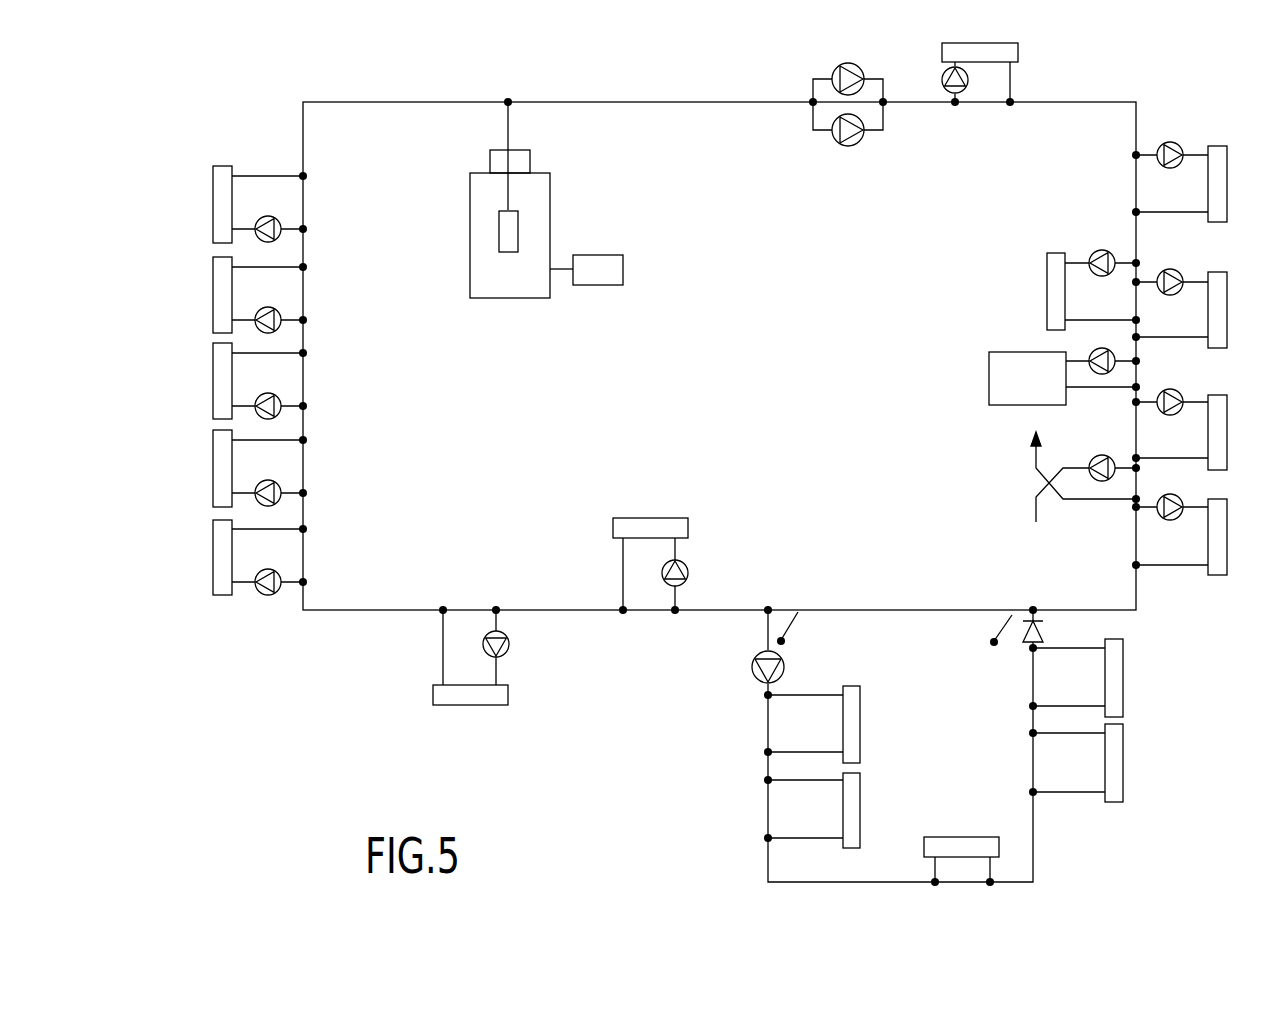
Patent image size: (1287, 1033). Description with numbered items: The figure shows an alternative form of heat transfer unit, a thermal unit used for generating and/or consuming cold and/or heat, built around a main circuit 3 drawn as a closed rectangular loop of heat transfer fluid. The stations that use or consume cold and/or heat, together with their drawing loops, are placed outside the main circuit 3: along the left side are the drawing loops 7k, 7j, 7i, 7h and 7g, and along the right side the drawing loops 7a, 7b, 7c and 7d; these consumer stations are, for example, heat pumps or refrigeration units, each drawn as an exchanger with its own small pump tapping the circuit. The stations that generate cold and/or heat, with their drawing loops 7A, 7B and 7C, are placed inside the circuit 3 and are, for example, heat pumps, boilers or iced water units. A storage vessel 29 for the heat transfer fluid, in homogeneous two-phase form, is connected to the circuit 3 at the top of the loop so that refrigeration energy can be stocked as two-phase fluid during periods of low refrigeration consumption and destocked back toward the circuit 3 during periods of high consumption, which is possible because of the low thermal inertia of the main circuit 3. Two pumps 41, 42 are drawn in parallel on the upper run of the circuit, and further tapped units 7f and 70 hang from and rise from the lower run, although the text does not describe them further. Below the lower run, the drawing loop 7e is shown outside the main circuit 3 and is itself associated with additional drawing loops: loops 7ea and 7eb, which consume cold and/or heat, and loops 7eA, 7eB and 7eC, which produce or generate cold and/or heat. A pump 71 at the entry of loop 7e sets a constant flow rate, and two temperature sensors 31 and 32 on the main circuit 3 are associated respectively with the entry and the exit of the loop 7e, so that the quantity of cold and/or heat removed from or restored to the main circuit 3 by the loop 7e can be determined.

The main circuit 3 is at (1048, 102).
The storage vessel 29 is at (525, 270).
The first circulation pump 41 is at (862, 73).
The second circulation pump 42 is at (858, 142).
The drawing loop 7k is at (250, 197).
The drawing loop 7j is at (250, 286).
The drawing loop 7i is at (257, 370).
The drawing loop 7h is at (245, 463).
The drawing loop 7g is at (255, 550).
The drawing loop 7a is at (1195, 170).
The drawing loop 7b is at (1190, 311).
The drawing loop 7c is at (1188, 433).
The drawing loop 7d is at (1185, 542).
The drawing loop 7A is at (1084, 293).
The drawing loop 7B is at (1112, 388).
The drawing loop 7C is at (1086, 485).
The heat exchanger unit 7f is at (468, 662).
The heat exchanger unit 70 is at (650, 553).
The temperature sensor 31 is at (781, 620).
The pump 71 is at (757, 672).
The temperature sensor 32 is at (981, 608).
The drawing loop 7e is at (998, 765).
The additional drawing loop 7eA is at (965, 865).
The additional drawing loop 7eB is at (810, 811).
The additional drawing loop 7eC is at (817, 727).
The additional drawing loop 7ea is at (1087, 682).
The additional drawing loop 7eb is at (1082, 772).